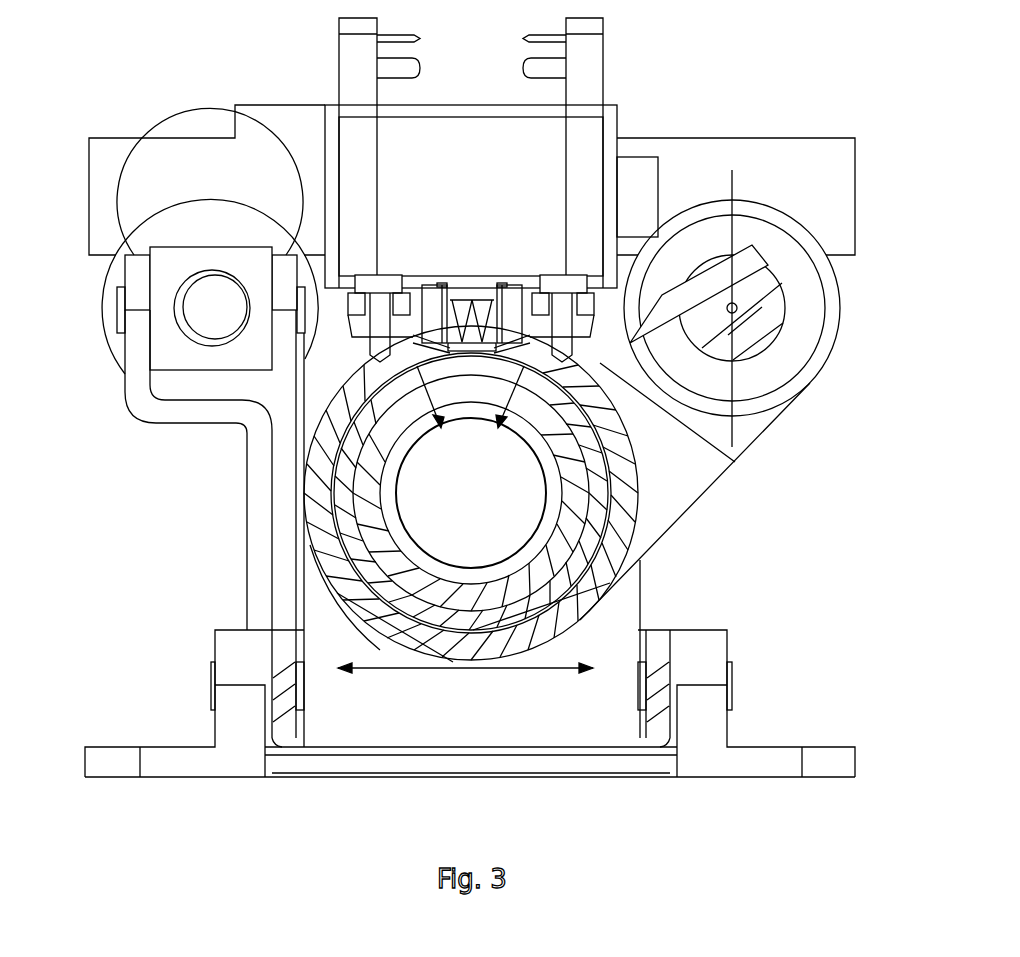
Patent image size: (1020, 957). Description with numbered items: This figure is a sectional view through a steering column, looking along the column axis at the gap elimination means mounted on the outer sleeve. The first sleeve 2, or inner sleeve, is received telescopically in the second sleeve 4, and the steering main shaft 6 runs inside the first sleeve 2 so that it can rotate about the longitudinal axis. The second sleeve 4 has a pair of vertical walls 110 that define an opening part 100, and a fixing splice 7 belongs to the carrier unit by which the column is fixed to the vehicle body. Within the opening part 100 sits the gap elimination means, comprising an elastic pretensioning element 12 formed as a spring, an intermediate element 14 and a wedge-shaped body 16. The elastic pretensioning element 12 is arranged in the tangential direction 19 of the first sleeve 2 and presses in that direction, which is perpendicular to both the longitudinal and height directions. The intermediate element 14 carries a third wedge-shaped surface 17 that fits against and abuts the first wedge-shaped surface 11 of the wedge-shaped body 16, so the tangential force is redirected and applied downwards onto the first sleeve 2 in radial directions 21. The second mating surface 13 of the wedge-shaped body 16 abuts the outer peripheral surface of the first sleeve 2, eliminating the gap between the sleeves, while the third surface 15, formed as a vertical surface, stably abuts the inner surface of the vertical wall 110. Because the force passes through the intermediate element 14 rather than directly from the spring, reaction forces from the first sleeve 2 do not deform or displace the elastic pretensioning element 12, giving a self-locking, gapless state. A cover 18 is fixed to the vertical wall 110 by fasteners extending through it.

The first sleeve 2 is at (602, 480).
The second sleeve 4 is at (620, 430).
The steering main shaft 6 is at (553, 518).
The fixing splice 7 is at (826, 746).
The first wedge-shaped surface 11 is at (502, 277).
The elastic pretensioning element 12 is at (470, 293).
The second mating surface 13 is at (522, 372).
The intermediate element 14 is at (450, 287).
The third surface 15 is at (752, 405).
The wedge-shaped body 16 is at (358, 387).
The third wedge-shaped surface 17 is at (430, 287).
The cover 18 is at (397, 277).
The tangential direction 19 is at (465, 678).
The radial directions 21 is at (490, 418).
The opening part 100 is at (528, 287).
The vertical walls 110 is at (357, 337).